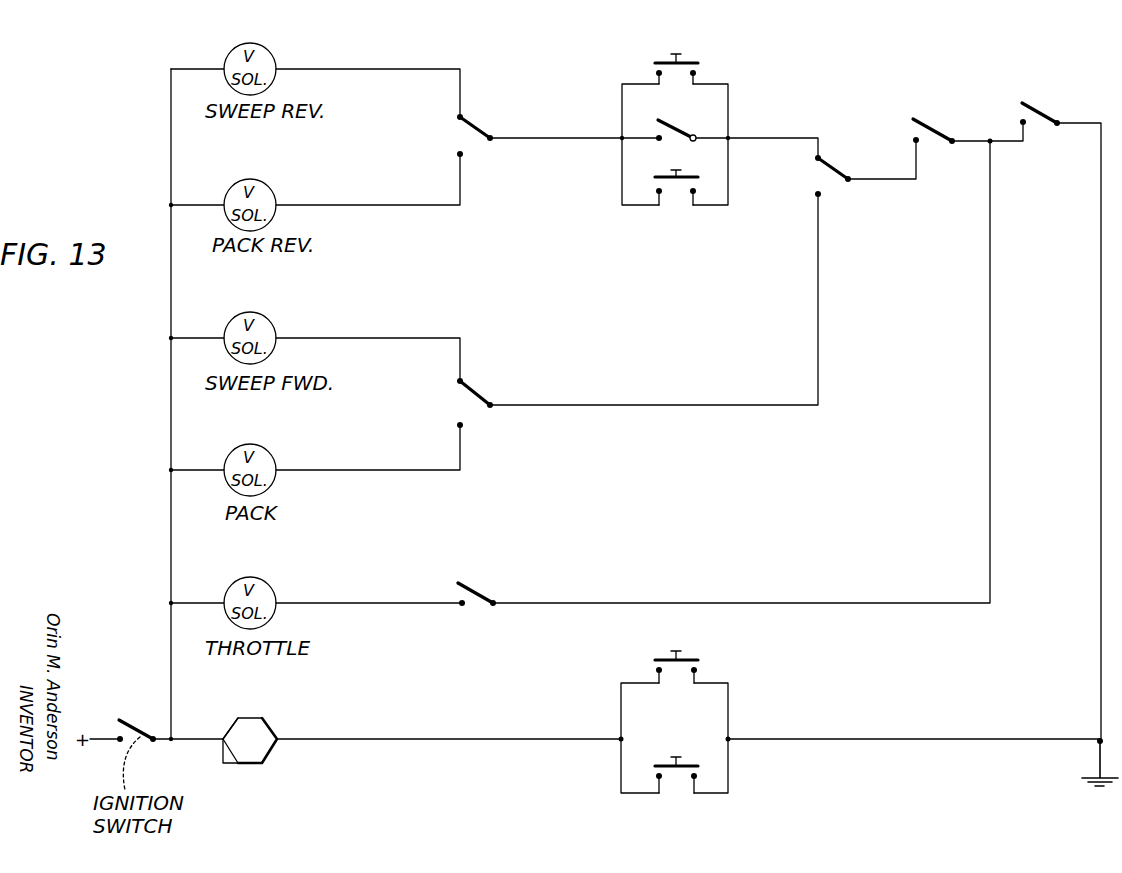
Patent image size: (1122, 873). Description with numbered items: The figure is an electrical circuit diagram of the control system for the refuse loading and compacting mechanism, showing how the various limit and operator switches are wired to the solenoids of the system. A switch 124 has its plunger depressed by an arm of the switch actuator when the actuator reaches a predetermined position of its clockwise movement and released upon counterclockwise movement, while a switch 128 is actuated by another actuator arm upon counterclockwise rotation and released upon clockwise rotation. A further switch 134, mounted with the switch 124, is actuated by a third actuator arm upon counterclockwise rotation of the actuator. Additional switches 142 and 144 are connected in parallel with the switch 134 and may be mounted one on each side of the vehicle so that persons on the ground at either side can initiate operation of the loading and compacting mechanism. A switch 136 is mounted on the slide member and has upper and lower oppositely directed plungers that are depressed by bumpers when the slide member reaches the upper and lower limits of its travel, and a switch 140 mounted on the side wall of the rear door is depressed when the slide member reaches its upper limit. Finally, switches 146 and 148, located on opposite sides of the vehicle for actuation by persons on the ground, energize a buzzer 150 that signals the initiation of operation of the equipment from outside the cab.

The switch 124 is at (452, 128).
The switch 128 is at (478, 390).
The switch 134 is at (675, 122).
The switch 136 is at (838, 182).
The switch 140 is at (478, 585).
The switch 142 is at (698, 62).
The switch 144 is at (677, 185).
The switch 146 is at (695, 658).
The switch 148 is at (678, 770).
The buzzer 150 is at (270, 727).